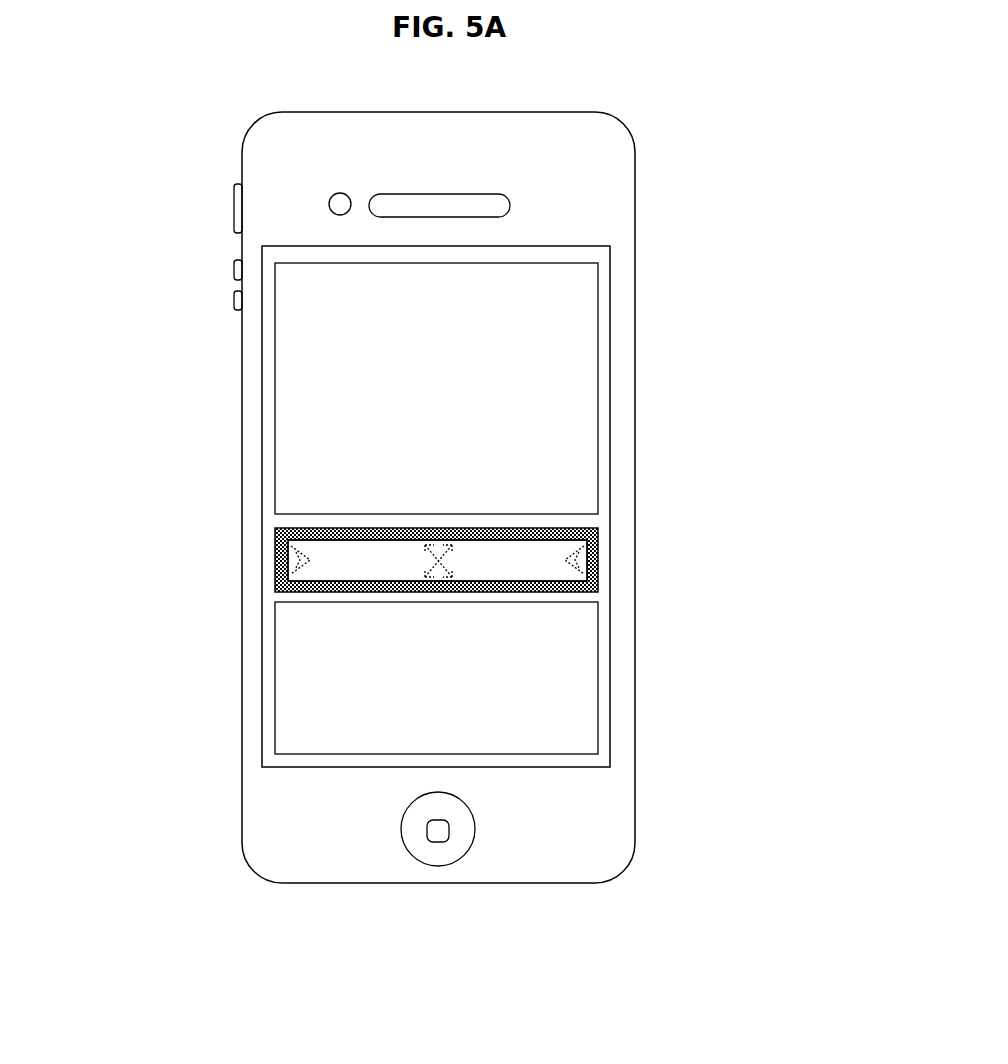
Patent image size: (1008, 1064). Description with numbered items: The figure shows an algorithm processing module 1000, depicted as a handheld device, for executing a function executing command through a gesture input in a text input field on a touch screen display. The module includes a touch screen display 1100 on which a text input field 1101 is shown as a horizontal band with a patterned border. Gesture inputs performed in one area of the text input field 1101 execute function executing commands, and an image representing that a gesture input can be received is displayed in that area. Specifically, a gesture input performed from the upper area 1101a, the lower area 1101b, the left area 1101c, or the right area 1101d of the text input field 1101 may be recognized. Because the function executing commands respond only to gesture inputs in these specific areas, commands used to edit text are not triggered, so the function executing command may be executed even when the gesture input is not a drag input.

The algorithm processing module 1000 is at (633, 242).
The touch screen display 1100 is at (610, 308).
The text input field 1101 is at (275, 545).
The upper area 1101a is at (487, 528).
The lower area 1101b is at (378, 592).
The left area 1101c is at (275, 575).
The right area 1101d is at (598, 577).